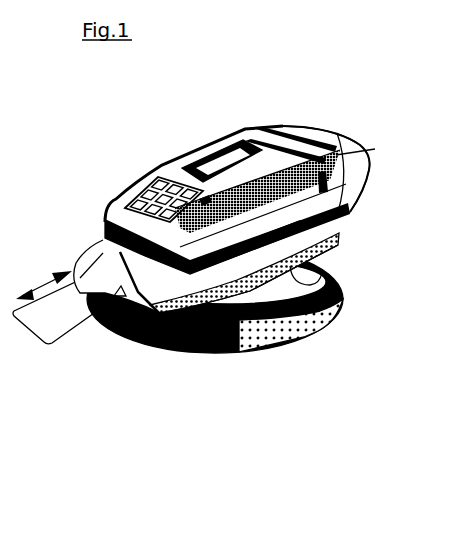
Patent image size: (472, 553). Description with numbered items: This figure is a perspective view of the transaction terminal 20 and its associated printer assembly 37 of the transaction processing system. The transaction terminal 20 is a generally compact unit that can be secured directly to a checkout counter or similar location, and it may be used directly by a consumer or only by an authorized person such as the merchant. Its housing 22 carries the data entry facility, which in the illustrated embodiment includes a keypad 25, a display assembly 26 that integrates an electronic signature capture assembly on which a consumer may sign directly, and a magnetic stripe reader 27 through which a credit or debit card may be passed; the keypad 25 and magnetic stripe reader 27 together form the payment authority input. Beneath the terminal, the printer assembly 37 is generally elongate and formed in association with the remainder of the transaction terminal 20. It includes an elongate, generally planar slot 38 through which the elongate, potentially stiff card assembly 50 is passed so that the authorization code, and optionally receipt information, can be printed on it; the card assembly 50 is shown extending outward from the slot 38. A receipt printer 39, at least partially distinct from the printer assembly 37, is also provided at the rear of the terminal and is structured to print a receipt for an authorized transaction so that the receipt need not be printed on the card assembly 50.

The transaction terminal 20 is at (224, 116).
The housing 22 is at (156, 171).
The keypad 25 is at (148, 201).
The display assembly 26 is at (205, 160).
The magnetic stripe reader 27 is at (310, 180).
The printer assembly 37 is at (322, 258).
The slot 38 is at (135, 345).
The receipt printer 39 is at (302, 126).
The card assembly 50 is at (82, 336).